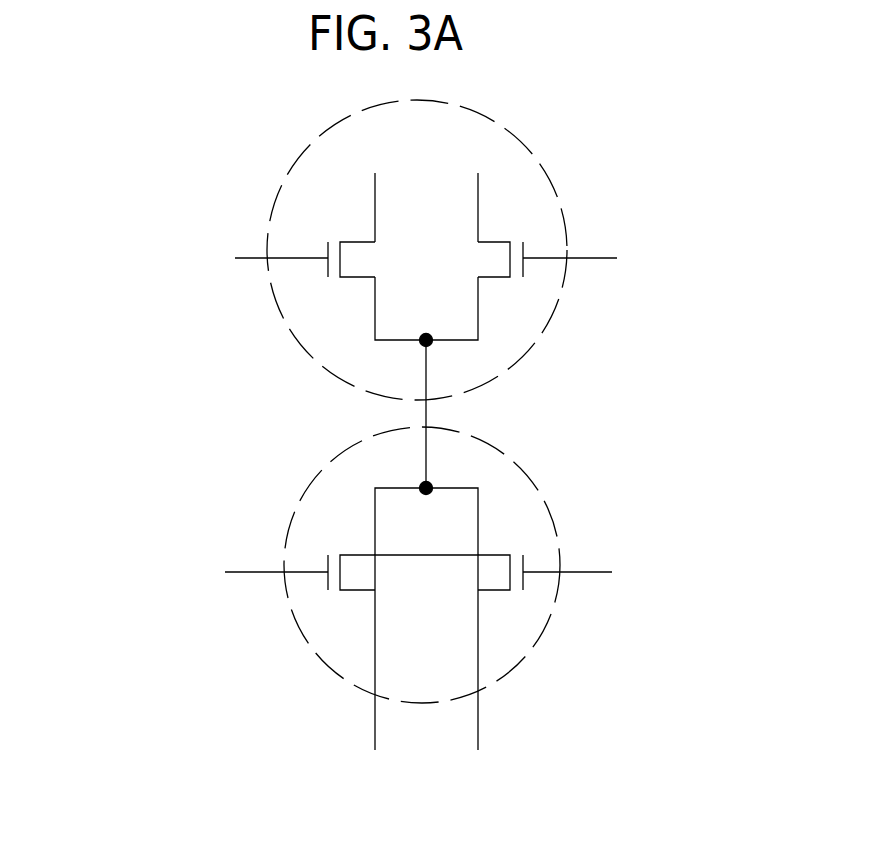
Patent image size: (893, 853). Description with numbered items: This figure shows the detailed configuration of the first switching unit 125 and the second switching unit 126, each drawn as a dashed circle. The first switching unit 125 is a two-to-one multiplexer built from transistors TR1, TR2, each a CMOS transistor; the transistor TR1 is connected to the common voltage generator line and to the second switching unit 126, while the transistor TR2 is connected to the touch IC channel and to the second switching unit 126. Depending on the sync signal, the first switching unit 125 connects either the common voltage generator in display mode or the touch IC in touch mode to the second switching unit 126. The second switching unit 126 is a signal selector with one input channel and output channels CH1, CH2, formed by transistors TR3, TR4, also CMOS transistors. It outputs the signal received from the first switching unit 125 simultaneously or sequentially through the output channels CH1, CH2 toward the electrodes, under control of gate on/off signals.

The first switching unit 125 is at (416, 604).
The second switching unit 126 is at (422, 250).
The transistor TR1 is at (211, 556).
The transistor TR2 is at (631, 556).
The transistor TR3 is at (216, 242).
The transistor TR4 is at (633, 242).
The output channel CH1 is at (371, 192).
The output channel CH2 is at (476, 192).